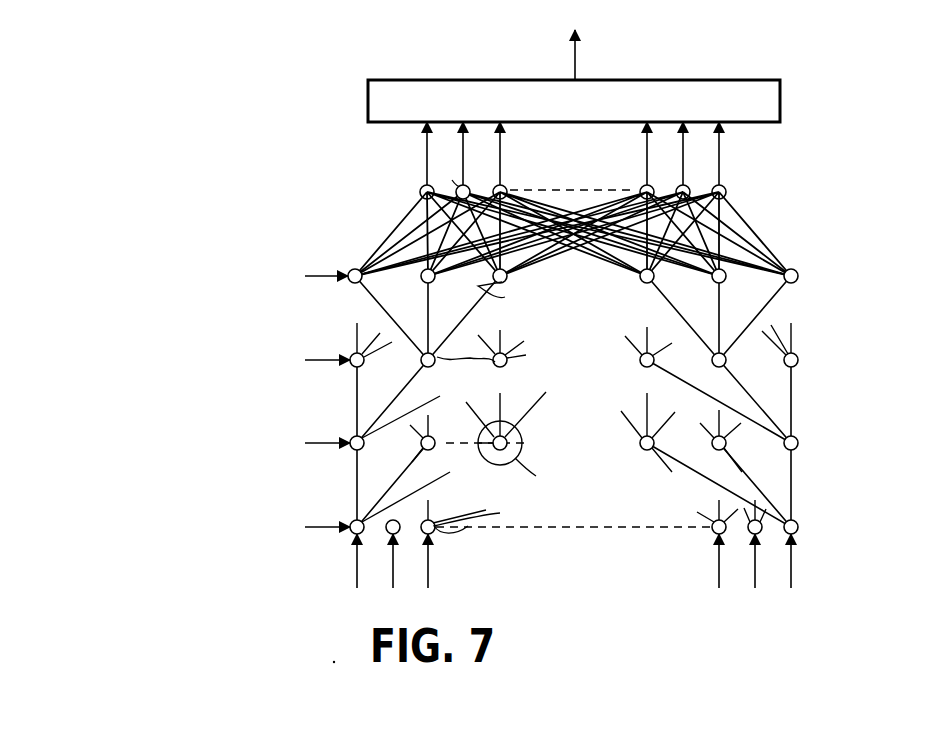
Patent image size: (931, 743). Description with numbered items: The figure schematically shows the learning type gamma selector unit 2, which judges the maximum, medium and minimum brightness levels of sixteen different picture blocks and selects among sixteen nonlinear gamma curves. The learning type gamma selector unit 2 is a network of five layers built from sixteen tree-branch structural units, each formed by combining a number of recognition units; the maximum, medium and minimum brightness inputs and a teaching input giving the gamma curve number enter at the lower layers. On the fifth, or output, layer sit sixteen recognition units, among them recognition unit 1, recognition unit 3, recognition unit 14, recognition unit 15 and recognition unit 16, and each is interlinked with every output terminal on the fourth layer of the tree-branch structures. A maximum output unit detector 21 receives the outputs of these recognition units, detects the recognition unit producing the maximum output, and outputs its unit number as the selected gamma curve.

The maximum output unit detector 21 is at (368, 97).
The learning type gamma selector unit 2 is at (604, 571).
The recognition unit 1 is at (422, 192).
The recognition unit 3 is at (502, 190).
The recognition unit 14 is at (650, 190).
The recognition unit 15 is at (688, 186).
The recognition unit 16 is at (726, 188).